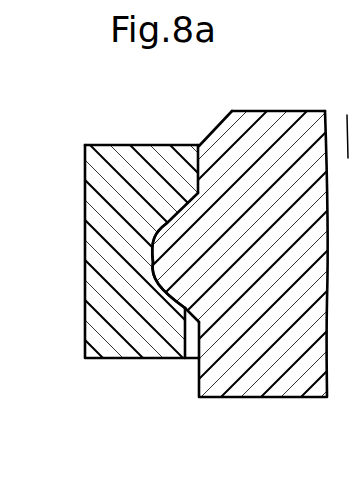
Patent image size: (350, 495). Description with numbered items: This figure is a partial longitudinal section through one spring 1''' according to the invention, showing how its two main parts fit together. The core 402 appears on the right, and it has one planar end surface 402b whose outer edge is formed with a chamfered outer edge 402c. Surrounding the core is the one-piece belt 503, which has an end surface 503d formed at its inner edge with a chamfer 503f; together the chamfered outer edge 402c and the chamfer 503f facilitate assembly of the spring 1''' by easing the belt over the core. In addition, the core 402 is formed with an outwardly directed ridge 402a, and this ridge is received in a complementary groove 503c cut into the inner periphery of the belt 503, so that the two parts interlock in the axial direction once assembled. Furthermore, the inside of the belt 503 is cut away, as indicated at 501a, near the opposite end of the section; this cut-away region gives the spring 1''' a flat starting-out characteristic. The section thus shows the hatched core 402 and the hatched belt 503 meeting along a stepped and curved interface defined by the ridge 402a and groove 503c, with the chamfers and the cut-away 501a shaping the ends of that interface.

The core 402 is at (261, 126).
The outwardly directed ridge 402a is at (177, 242).
The planar end surface 402b is at (298, 110).
The chamfered outer edge 402c is at (213, 124).
The one-piece belt 503 is at (118, 342).
The complementary groove 503c is at (160, 288).
The end surface 503d is at (101, 145).
The chamfer 503f is at (186, 146).
The cut-away portion 501a is at (192, 330).
The spring 1''' is at (272, 439).